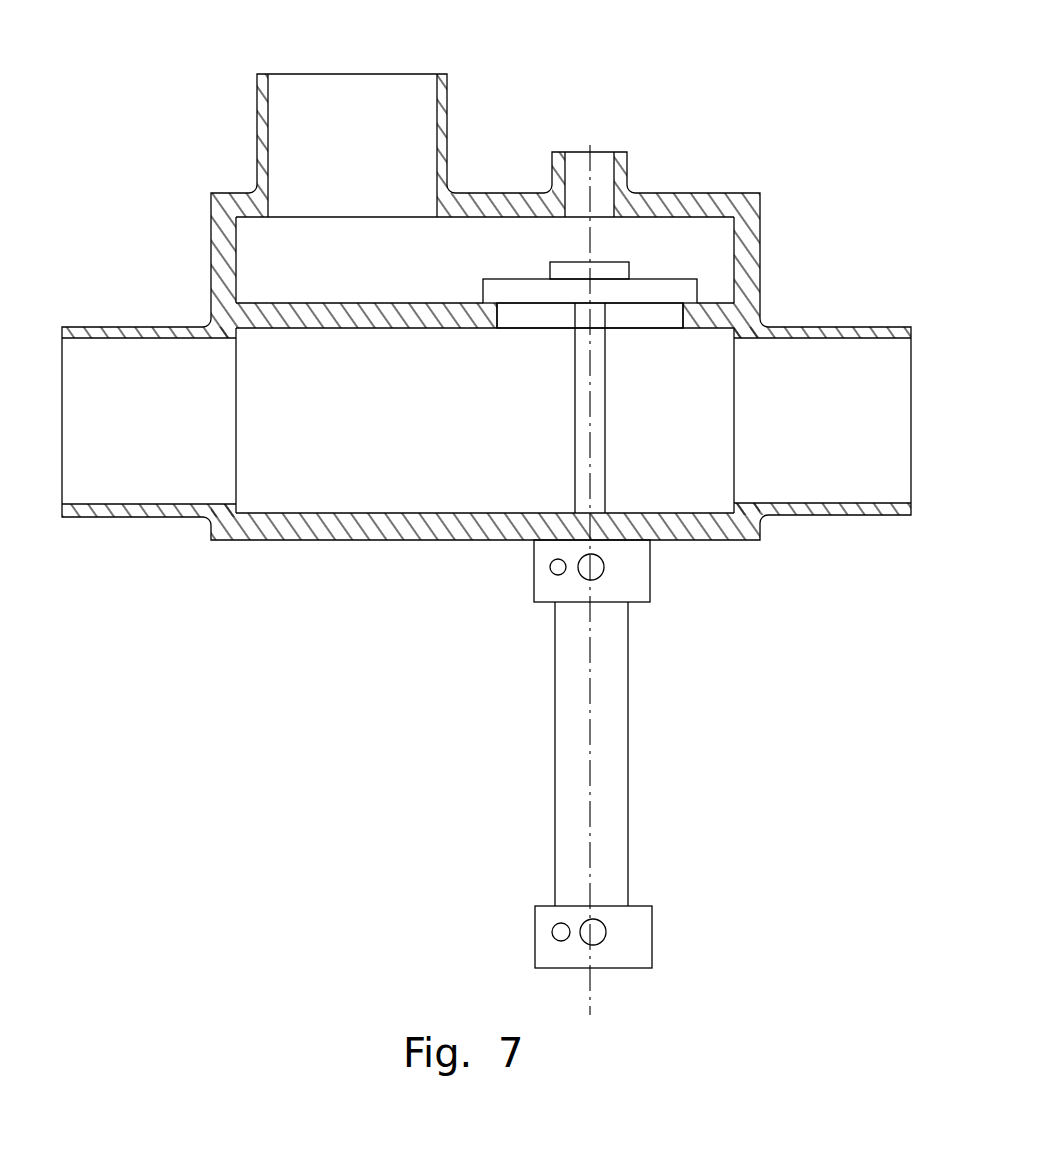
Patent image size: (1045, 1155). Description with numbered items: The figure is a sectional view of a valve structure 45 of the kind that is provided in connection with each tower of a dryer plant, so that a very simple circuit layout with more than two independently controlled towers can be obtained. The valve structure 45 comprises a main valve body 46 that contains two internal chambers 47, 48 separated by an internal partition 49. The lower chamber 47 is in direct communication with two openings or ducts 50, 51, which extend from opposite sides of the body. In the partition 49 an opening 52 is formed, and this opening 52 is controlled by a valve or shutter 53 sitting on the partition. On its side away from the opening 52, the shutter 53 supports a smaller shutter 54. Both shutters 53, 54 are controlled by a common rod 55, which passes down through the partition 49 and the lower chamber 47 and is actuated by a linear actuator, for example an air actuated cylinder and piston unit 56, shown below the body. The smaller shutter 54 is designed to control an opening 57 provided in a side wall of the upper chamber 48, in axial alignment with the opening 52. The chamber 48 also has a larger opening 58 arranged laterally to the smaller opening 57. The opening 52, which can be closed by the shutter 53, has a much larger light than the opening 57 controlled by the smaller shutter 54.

The valve structure 45 is at (683, 158).
The main valve body 46 is at (388, 532).
The internal chamber 47 is at (441, 433).
The internal chamber 48 is at (388, 275).
The internal partition 49 is at (328, 318).
The opening or duct 50 is at (118, 490).
The opening or duct 51 is at (843, 495).
The opening 52 is at (647, 318).
The valve or shutter 53 is at (697, 290).
The smaller shutter 54 is at (630, 268).
The common rod 55 is at (606, 452).
The air actuated cylinder and piston unit 56 is at (625, 762).
The opening 57 is at (578, 157).
The larger opening 58 is at (305, 88).